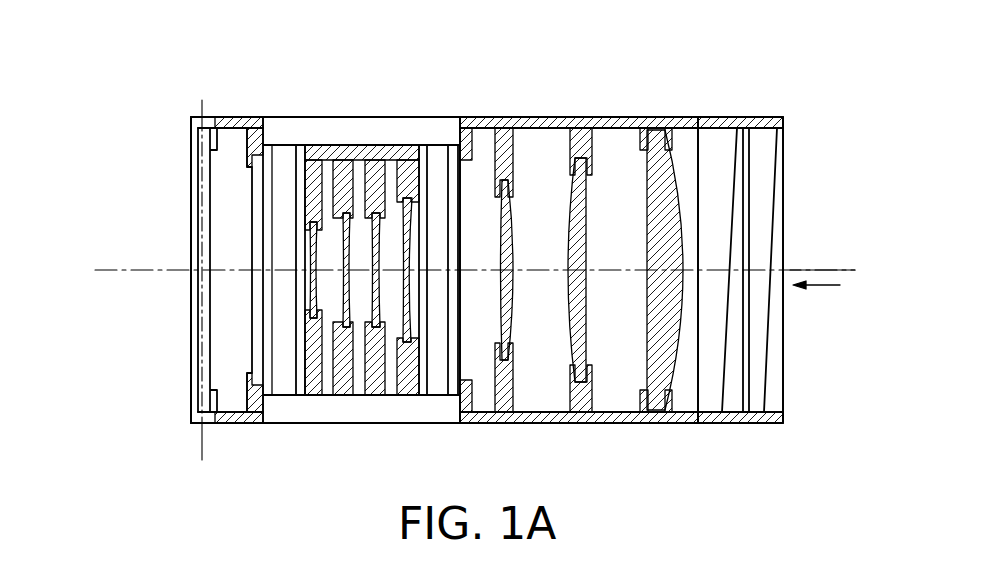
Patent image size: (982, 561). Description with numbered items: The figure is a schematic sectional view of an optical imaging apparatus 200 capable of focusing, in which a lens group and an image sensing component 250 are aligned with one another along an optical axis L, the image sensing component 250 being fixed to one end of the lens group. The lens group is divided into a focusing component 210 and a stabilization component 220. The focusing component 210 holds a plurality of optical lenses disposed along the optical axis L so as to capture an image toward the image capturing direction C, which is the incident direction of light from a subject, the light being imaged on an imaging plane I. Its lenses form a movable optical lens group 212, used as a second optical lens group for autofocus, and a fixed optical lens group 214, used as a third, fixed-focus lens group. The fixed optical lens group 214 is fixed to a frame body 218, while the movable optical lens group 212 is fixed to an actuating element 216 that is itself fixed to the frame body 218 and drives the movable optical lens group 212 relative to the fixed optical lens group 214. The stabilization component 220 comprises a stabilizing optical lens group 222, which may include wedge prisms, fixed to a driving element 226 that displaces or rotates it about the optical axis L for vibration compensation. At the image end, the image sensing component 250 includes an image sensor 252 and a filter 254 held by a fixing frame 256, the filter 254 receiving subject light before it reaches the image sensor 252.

The optical imaging apparatus 200 is at (840, 78).
The focusing component 210 is at (655, 68).
The movable optical lens group 212 is at (344, 240).
The fixed optical lens group 214 is at (570, 168).
The actuating element 216 is at (400, 128).
The frame body 218 is at (608, 127).
The stabilization component 220 is at (805, 68).
The stabilizing optical lens group 222 is at (735, 170).
The driving element 226 is at (770, 128).
The image sensing component 250 is at (115, 107).
The image sensor 252 is at (196, 170).
The filter 254 is at (263, 211).
The fixing frame 256 is at (193, 122).
The optical axis L is at (820, 268).
The image capturing direction C is at (829, 287).
The imaging plane I is at (205, 446).